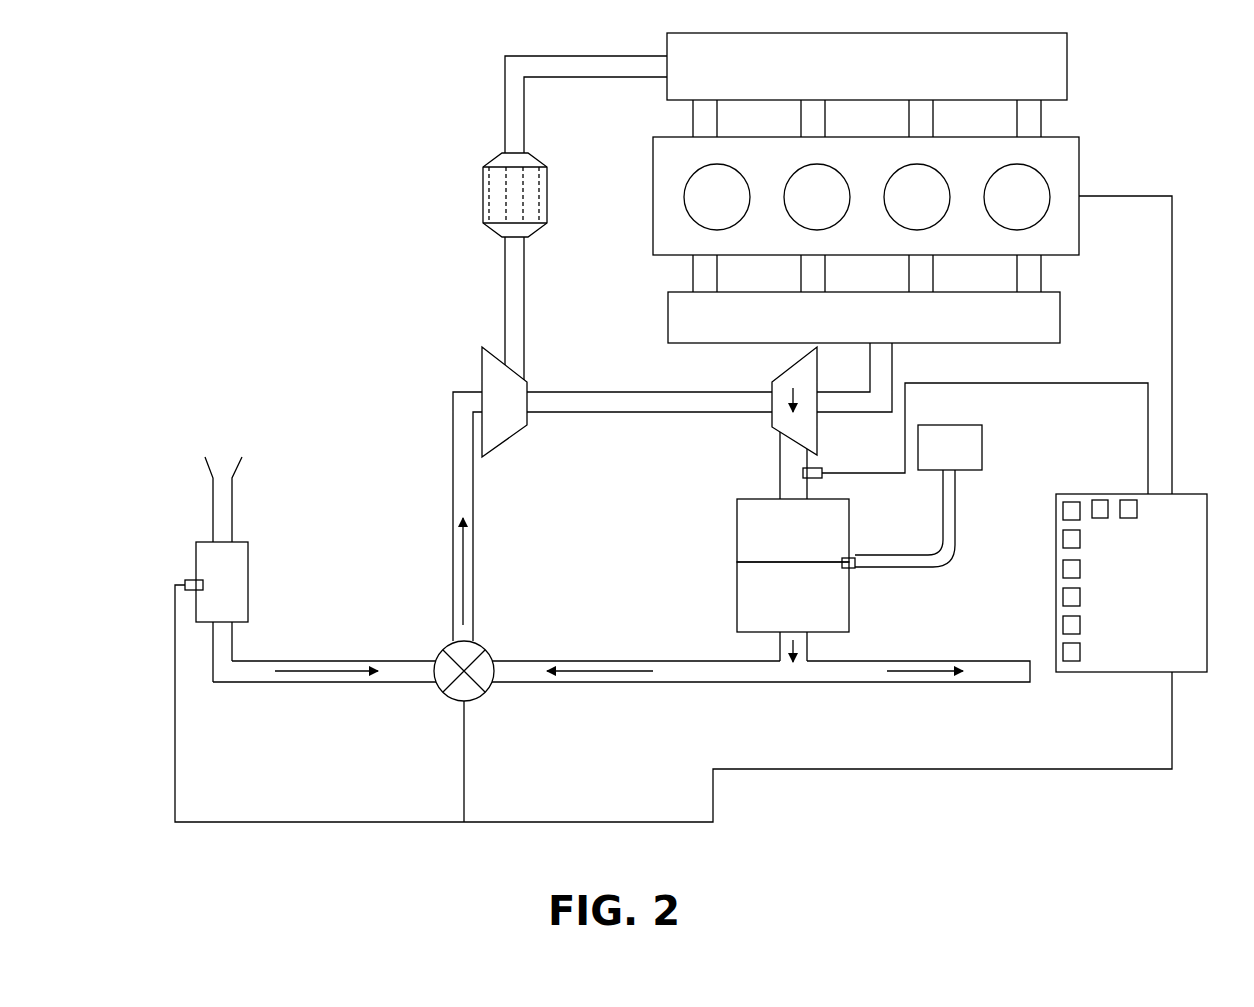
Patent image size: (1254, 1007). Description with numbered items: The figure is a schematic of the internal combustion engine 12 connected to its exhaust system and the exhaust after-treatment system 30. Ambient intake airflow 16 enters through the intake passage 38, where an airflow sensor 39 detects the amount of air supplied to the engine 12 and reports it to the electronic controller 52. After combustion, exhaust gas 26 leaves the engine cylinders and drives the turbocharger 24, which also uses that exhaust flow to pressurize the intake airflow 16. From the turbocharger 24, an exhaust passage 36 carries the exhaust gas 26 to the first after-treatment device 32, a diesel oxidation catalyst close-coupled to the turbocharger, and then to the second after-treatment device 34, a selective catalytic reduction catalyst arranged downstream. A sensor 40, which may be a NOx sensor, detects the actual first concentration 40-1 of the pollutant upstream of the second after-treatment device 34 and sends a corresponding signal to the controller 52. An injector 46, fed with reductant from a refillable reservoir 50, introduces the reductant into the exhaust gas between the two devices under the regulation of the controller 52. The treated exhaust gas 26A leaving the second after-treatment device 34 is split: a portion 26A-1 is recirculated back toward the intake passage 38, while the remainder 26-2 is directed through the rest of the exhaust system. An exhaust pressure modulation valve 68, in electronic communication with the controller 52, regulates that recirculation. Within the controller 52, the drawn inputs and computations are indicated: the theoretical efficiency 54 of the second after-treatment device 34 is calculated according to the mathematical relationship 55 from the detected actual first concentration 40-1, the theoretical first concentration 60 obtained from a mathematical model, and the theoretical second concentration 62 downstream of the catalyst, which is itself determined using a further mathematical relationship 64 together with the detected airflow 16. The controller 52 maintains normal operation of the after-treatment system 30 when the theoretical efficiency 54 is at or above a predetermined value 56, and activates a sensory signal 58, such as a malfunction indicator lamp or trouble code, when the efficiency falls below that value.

The internal combustion engine 12 is at (1084, 237).
The intake airflow 16 is at (337, 672).
The turbocharger 24 is at (607, 377).
The exhaust gas 26 is at (786, 400).
The treated exhaust gas 26A is at (742, 652).
The recirculated portion of treated exhaust gas 26A-1 is at (612, 668).
The remainder of treated exhaust gas 26-2 is at (928, 668).
The exhaust after-treatment system 30 is at (665, 700).
The first after-treatment device 32 is at (793, 530).
The second after-treatment device 34 is at (793, 597).
The exhaust passage 36 is at (780, 445).
The intake passage 38 is at (212, 500).
The airflow sensor 39 is at (190, 578).
The sensor 40 is at (822, 471).
The actual first concentration 40-1 is at (1070, 662).
The injector 46 is at (853, 558).
The refillable reservoir 50 is at (918, 496).
The electronic controller 52 is at (1131, 583).
The theoretical efficiency 54 is at (1063, 624).
The mathematical relationship 55 is at (1063, 596).
The predetermined value 56 is at (1063, 568).
The sensory signal 58 is at (1063, 540).
The theoretical first concentration 60 is at (1063, 512).
The theoretical second concentration 62 is at (1100, 498).
The mathematical relationship 64 is at (1128, 498).
The exhaust pressure modulation valve 68 is at (483, 690).